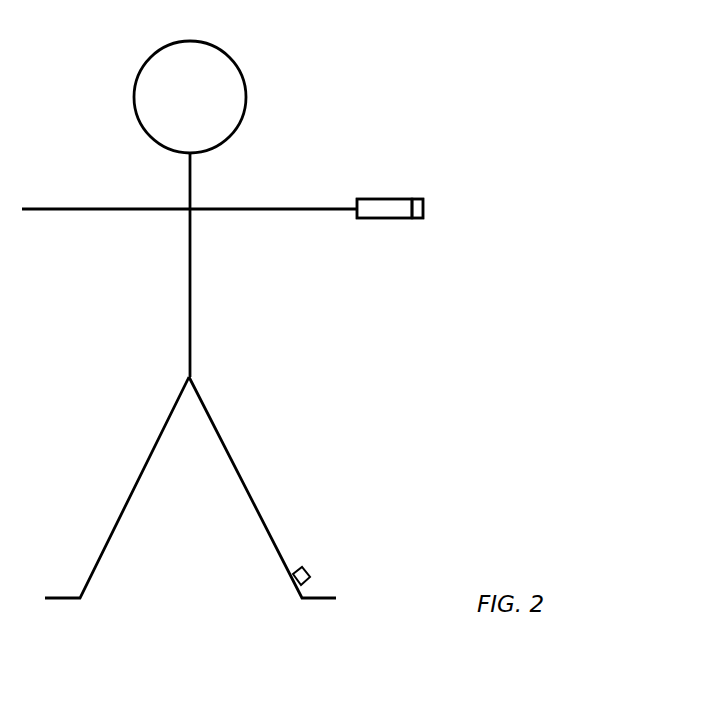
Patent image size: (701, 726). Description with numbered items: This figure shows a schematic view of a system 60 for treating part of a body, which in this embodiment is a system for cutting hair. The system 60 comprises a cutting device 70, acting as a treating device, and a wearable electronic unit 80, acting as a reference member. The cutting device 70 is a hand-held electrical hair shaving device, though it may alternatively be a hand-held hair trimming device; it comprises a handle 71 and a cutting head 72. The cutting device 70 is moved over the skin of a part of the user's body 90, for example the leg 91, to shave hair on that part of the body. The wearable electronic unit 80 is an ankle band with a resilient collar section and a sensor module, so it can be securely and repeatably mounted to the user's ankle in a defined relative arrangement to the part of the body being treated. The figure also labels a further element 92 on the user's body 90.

The system 60 is at (482, 140).
The cutting device 70 is at (399, 206).
The handle 71 is at (375, 219).
The cutting head 72 is at (421, 219).
The wearable electronic unit 80 is at (292, 574).
The user's body 90 is at (188, 256).
The leg 91 is at (244, 68).
The user leg 92 is at (220, 430).